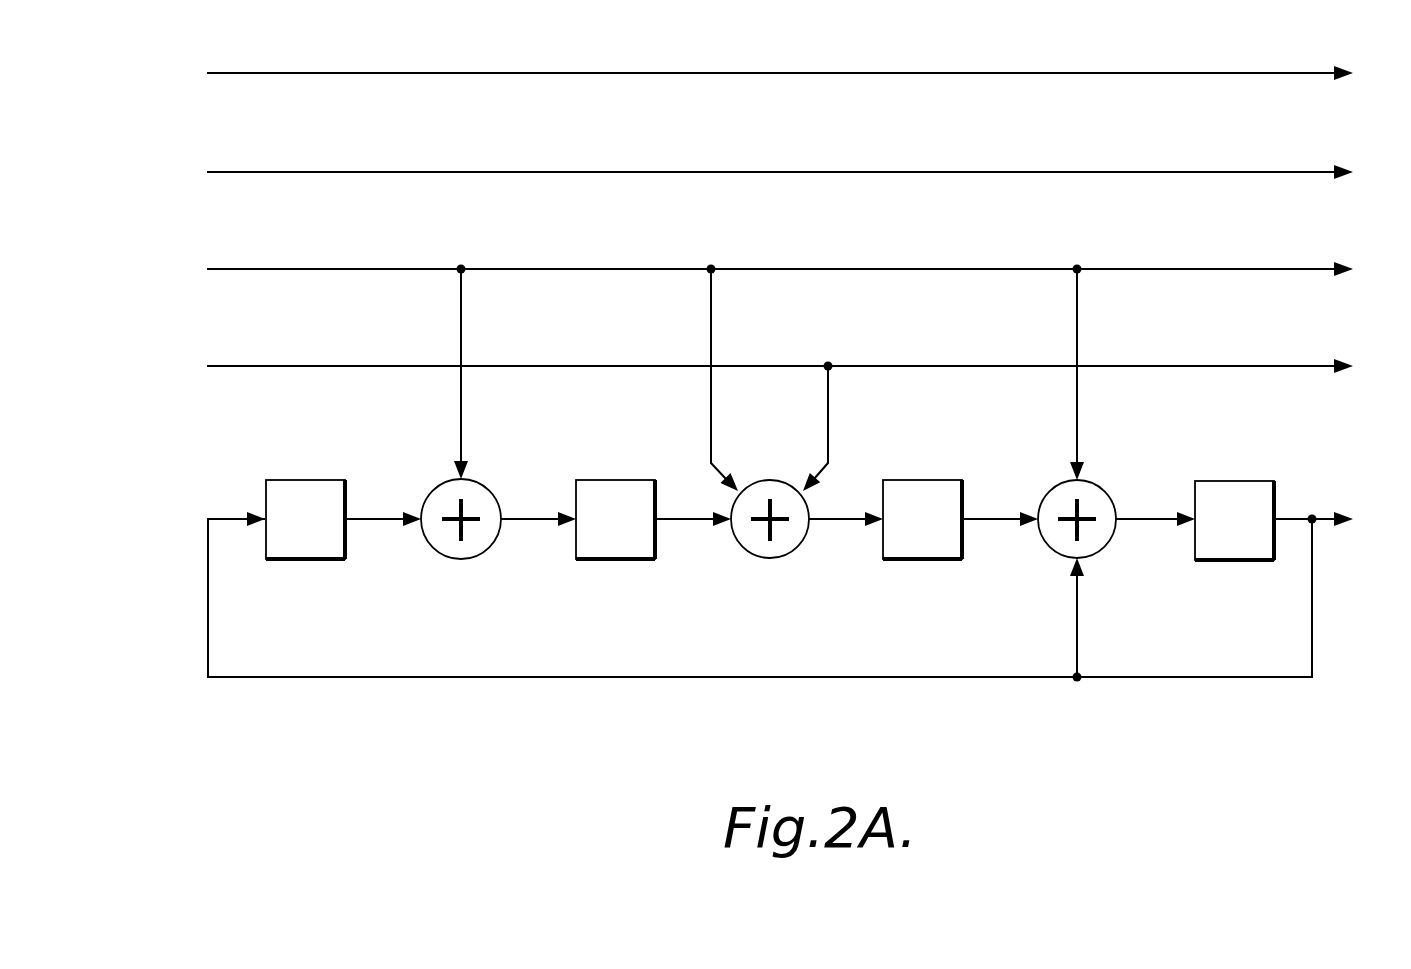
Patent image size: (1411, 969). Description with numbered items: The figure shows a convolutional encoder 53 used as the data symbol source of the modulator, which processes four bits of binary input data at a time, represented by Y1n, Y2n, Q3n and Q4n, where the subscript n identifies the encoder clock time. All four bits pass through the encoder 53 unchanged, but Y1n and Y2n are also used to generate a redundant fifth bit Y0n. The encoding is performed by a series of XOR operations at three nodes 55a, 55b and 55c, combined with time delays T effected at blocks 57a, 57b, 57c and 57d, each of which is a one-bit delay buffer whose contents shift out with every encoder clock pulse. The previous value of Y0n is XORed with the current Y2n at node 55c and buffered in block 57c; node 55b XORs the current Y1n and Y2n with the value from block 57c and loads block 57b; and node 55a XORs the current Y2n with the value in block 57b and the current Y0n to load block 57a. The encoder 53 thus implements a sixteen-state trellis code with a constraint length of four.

The convolutional encoder 53 is at (138, 788).
The XOR node 55a is at (1105, 547).
The XOR node 55b is at (798, 547).
The XOR node 55c is at (489, 547).
The time delay block 57a is at (1234, 481).
The time delay block 57b is at (922, 480).
The time delay block 57c is at (615, 480).
The time delay block 57d is at (305, 480).